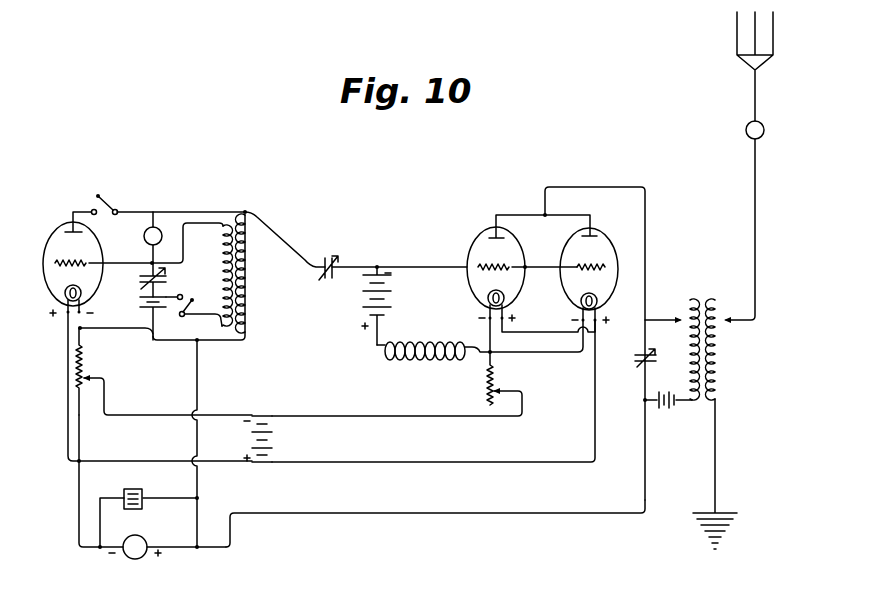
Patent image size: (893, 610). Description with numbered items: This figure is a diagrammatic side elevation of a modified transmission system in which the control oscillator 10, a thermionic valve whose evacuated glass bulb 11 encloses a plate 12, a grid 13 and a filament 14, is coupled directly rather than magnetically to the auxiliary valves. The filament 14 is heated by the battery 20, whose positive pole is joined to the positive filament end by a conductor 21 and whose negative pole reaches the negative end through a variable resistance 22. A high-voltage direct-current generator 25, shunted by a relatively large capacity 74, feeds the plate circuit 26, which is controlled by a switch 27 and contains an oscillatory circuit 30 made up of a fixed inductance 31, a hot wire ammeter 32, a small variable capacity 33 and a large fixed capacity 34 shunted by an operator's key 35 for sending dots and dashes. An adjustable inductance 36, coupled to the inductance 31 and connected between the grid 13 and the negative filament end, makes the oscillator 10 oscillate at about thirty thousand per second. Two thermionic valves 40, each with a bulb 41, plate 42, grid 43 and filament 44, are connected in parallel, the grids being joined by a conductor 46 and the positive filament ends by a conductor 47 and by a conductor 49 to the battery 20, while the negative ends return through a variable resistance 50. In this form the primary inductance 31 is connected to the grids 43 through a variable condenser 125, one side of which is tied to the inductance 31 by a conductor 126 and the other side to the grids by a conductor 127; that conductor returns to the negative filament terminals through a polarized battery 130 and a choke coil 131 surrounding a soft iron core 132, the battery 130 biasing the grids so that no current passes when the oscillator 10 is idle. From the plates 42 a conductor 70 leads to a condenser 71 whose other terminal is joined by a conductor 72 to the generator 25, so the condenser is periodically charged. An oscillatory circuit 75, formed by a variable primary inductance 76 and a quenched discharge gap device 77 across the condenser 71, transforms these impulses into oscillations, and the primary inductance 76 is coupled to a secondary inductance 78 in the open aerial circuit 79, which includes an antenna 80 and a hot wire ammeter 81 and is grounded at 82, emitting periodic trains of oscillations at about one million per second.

The control oscillator 10 is at (49, 242).
The evacuated glass bulb 11 is at (43, 257).
The plate 12 is at (66, 230).
The grid 13 is at (56, 267).
The filament 14 is at (65, 296).
The battery 20 is at (271, 439).
The conductor 21 is at (67, 405).
The variable resistance 22 is at (87, 385).
The electrical generator 25 is at (135, 559).
The plate circuit 26 is at (181, 201).
The switch 27 is at (109, 193).
The oscillatory circuit 30 is at (167, 230).
The fixed inductance 31 is at (252, 283).
The hot wire ammeter 32 is at (143, 236).
The variable capacity 33 is at (168, 280).
The fixed capacity 34 is at (141, 301).
The operator's key 35 is at (191, 309).
The adjustable inductance 36 is at (217, 252).
The thermionic valve 40 is at (532, 268).
The evacuated glass bulb 41 is at (628, 253).
The plate 42 is at (540, 235).
The grid 43 is at (542, 292).
The filament 44 is at (488, 305).
The conductor 46 is at (540, 270).
The conductor 47 is at (548, 322).
The conductor 49 is at (387, 464).
The variable resistance 50 is at (487, 387).
The conductor 70 is at (646, 247).
The condenser 71 is at (634, 358).
The conductor 72 is at (435, 520).
The capacity 74 is at (124, 492).
The oscillatory circuit 75 is at (668, 382).
The primary inductance 76 is at (681, 337).
The discharge gap device 77 is at (666, 408).
The secondary inductance 78 is at (722, 355).
The open aerial circuit 79 is at (753, 231).
The antenna 80 is at (753, 98).
The hot wire ammeter 81 is at (763, 133).
The ground 82 is at (723, 474).
The variable condenser 125 is at (328, 257).
The conductor 126 is at (284, 240).
The conductor 127 is at (406, 266).
The polarized battery 130 is at (362, 299).
The choke coil 131 is at (425, 361).
The soft iron core 132 is at (384, 351).